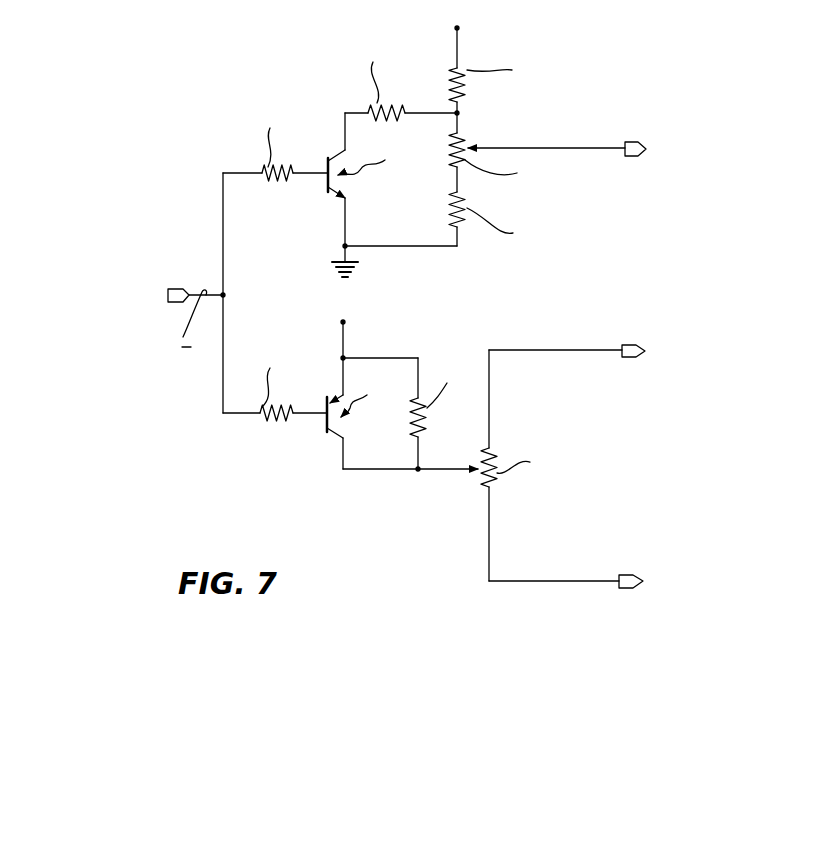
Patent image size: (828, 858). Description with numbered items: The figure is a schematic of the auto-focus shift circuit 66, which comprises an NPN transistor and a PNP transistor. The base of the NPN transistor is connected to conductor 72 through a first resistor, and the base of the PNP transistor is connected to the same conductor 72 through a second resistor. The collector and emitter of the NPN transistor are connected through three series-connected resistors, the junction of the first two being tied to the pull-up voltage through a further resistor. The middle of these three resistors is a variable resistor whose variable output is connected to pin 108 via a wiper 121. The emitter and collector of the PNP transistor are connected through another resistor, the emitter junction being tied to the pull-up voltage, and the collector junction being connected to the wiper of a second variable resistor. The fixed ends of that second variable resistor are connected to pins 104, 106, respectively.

The auto-focus shift circuit 66 is at (318, 58).
The conductor 72 is at (175, 288).
The wiper 121 is at (525, 152).
The pin 108 is at (630, 145).
The pin 104 is at (628, 348).
The pin 106 is at (625, 577).